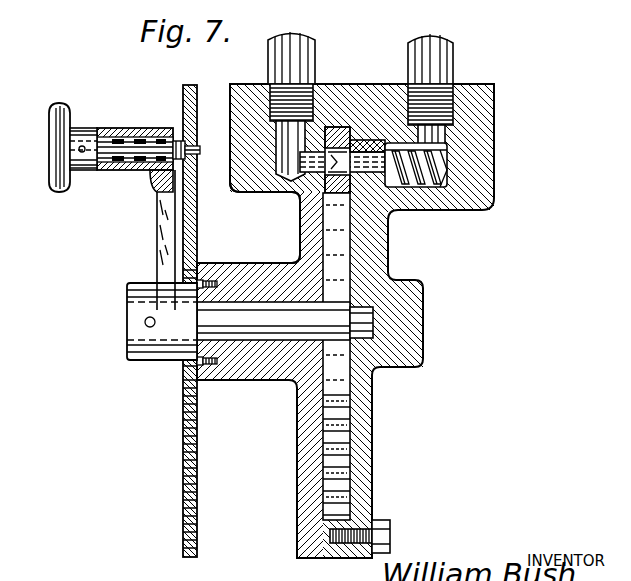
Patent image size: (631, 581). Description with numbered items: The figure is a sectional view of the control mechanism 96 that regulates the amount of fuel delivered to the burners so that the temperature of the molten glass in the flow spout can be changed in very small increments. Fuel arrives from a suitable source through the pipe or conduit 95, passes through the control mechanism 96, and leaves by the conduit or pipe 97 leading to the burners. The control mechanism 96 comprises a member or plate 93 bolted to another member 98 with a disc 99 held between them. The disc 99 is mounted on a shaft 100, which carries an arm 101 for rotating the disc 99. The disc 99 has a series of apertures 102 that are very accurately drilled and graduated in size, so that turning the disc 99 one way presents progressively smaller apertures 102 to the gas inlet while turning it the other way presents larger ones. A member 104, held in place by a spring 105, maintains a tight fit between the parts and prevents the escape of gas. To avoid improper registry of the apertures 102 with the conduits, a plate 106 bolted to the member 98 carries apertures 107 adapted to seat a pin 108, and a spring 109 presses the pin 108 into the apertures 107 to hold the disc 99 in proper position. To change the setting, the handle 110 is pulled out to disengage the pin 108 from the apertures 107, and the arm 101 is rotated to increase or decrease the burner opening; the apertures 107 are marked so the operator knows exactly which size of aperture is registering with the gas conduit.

The plate 93 is at (378, 251).
The conduit 95 is at (442, 62).
The control mechanism 96 is at (505, 132).
The conduit 97 is at (312, 58).
The member 98 is at (305, 230).
The disc 99 is at (332, 407).
The shaft 100 is at (272, 328).
The arm 101 is at (160, 250).
The apertures 102 is at (337, 130).
The member 104 is at (372, 130).
The spring 105 is at (450, 163).
The plate 106 is at (191, 458).
The apertures 107 is at (200, 143).
The pin 108 is at (178, 142).
The spring 109 is at (122, 130).
The handle 110 is at (56, 180).